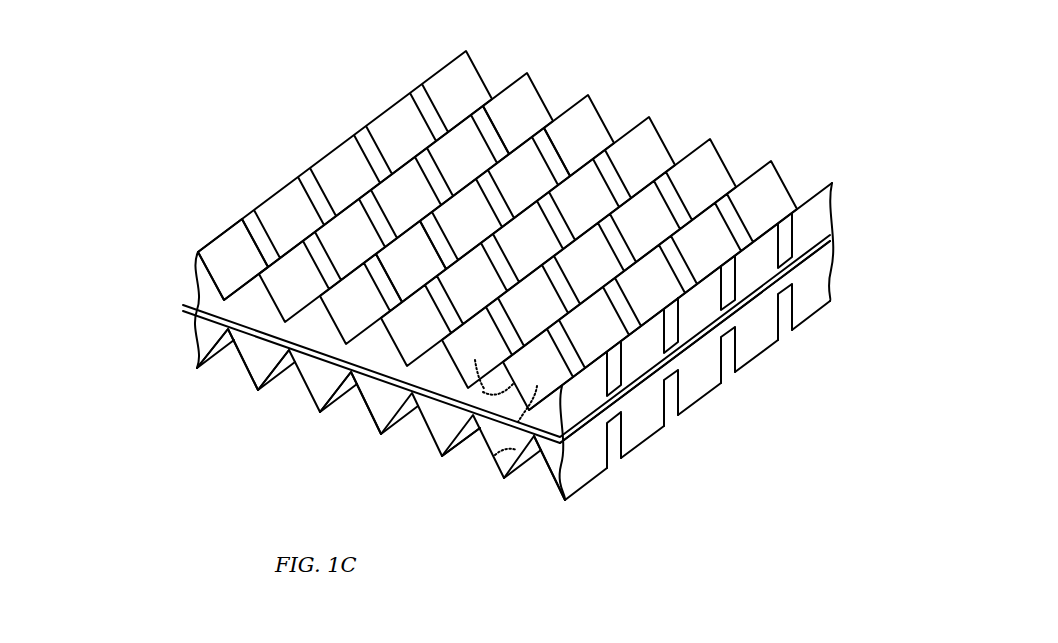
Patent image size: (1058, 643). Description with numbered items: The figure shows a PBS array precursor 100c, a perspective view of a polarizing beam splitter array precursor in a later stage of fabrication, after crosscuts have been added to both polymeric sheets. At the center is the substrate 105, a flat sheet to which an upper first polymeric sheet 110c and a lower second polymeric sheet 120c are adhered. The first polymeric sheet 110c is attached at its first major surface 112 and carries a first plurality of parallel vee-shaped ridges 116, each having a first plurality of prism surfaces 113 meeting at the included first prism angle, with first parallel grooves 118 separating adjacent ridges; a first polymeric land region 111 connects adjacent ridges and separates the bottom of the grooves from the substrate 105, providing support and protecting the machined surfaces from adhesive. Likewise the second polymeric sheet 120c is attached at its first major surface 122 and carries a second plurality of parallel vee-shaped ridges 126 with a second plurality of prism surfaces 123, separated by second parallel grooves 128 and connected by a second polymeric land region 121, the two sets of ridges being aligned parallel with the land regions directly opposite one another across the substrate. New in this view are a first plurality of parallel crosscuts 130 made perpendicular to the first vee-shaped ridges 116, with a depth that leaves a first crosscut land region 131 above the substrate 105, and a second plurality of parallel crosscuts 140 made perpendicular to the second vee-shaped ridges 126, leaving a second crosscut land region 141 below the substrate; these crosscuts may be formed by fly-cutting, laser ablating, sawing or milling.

The PBS array precursor 100c is at (242, 97).
The first polymeric sheet 110c is at (160, 240).
The second polymeric sheet 120c is at (165, 356).
The substrate 105 is at (190, 306).
The first polymeric land region 111 is at (341, 349).
The first major surface 112 is at (243, 350).
The first plurality of prism surfaces 113 is at (430, 271).
The first plurality of parallel vee-shaped ridges 116 is at (525, 108).
The first parallel grooves 118 is at (612, 105).
The second polymeric land region 121 is at (345, 370).
The first major surface of second polymeric sheet 122 is at (241, 352).
The second plurality of prism surfaces 123 is at (532, 452).
The second plurality of parallel vee-shaped ridges 126 is at (300, 373).
The second parallel grooves 128 is at (472, 452).
The first plurality of parallel crosscuts 130 is at (237, 203).
The first crosscut land region 131 is at (633, 378).
The second plurality of parallel crosscuts 140 is at (615, 460).
The second crosscut land region 141 is at (618, 405).